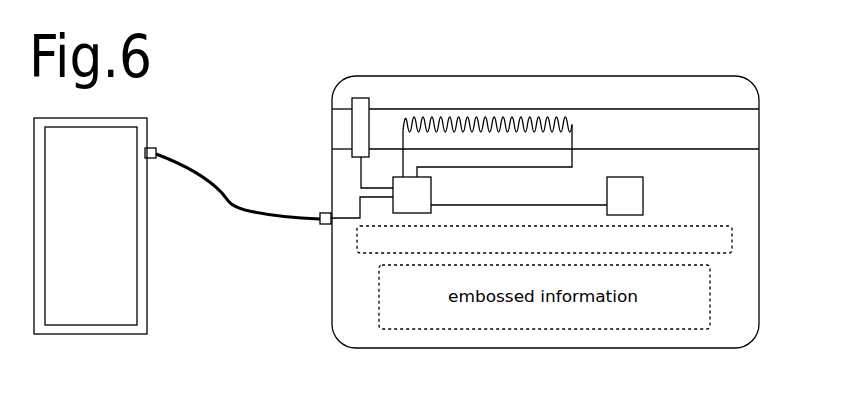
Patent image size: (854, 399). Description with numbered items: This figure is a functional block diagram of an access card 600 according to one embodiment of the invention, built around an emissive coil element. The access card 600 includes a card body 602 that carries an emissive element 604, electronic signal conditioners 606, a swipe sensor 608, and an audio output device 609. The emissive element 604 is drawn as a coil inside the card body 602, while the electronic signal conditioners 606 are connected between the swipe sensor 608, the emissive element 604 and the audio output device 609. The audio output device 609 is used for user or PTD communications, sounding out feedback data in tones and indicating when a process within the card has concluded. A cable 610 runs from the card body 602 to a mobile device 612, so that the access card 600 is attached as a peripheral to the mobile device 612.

The access card 600 is at (288, 36).
The card body 602 is at (331, 240).
The emissive element 604 is at (574, 121).
The electronic signal conditioners 606 is at (431, 191).
The swipe sensor 608 is at (364, 98).
The audio output device 609 is at (645, 181).
The cable 610 is at (240, 171).
The mobile device 612 is at (106, 266).